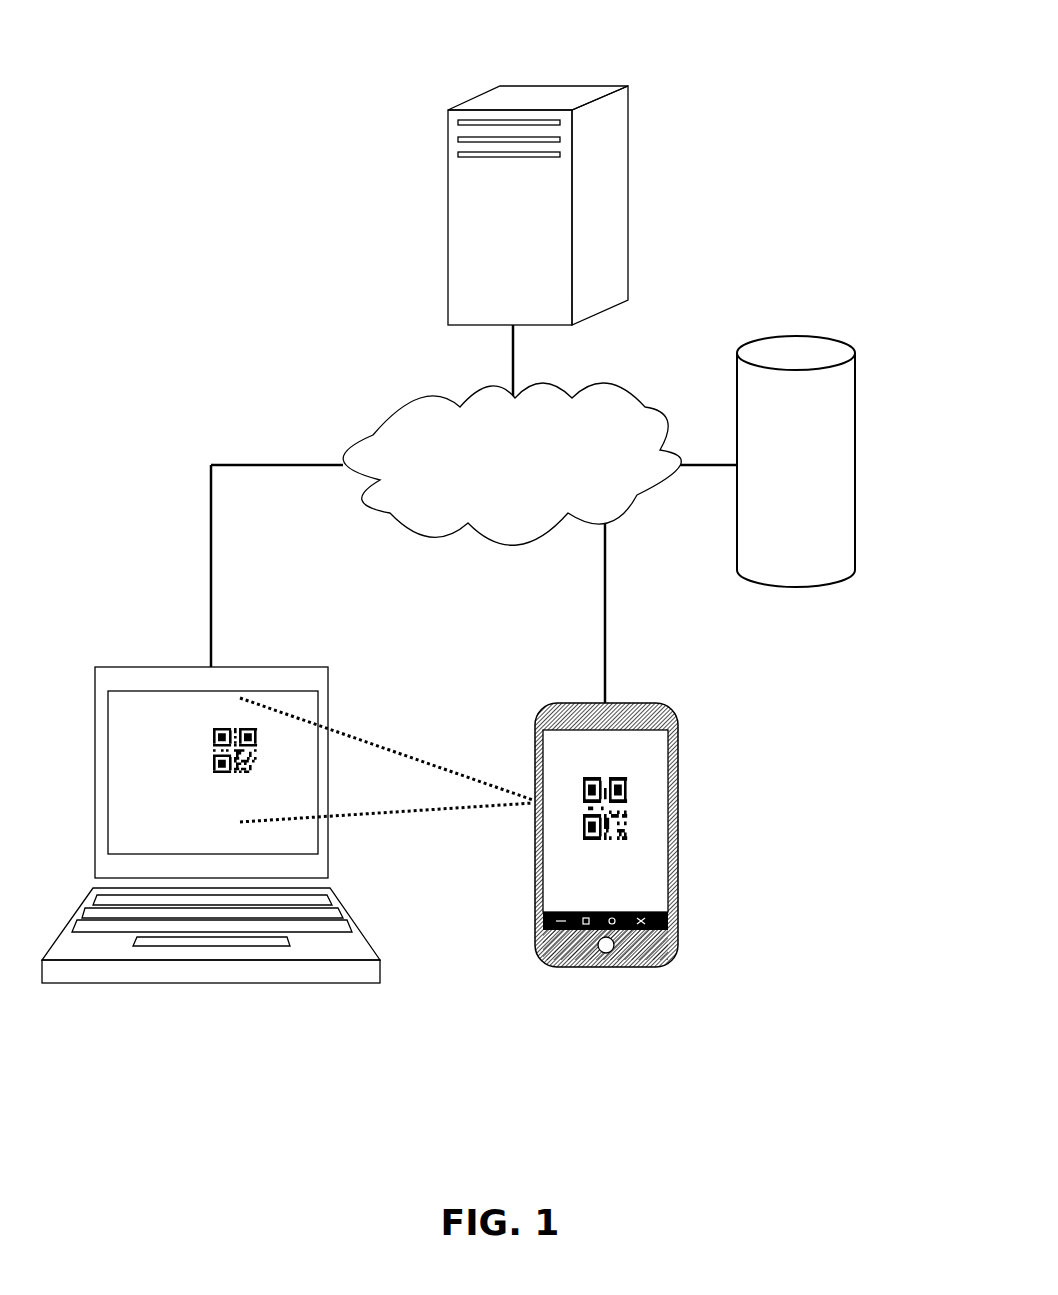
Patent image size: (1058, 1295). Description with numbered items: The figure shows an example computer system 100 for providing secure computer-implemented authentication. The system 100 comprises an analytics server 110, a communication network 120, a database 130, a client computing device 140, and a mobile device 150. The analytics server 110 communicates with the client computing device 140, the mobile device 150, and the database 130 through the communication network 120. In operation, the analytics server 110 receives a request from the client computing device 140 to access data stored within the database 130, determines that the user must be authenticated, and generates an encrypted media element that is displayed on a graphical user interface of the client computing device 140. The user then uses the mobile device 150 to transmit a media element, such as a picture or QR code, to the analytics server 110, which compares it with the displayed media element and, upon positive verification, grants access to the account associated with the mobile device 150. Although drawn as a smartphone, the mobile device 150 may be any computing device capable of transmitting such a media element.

The system 100 is at (896, 59).
The analytics server 110 is at (538, 205).
The communication network 120 is at (512, 464).
The database 130 is at (796, 461).
The client computing device 140 is at (211, 853).
The mobile device 150 is at (606, 871).